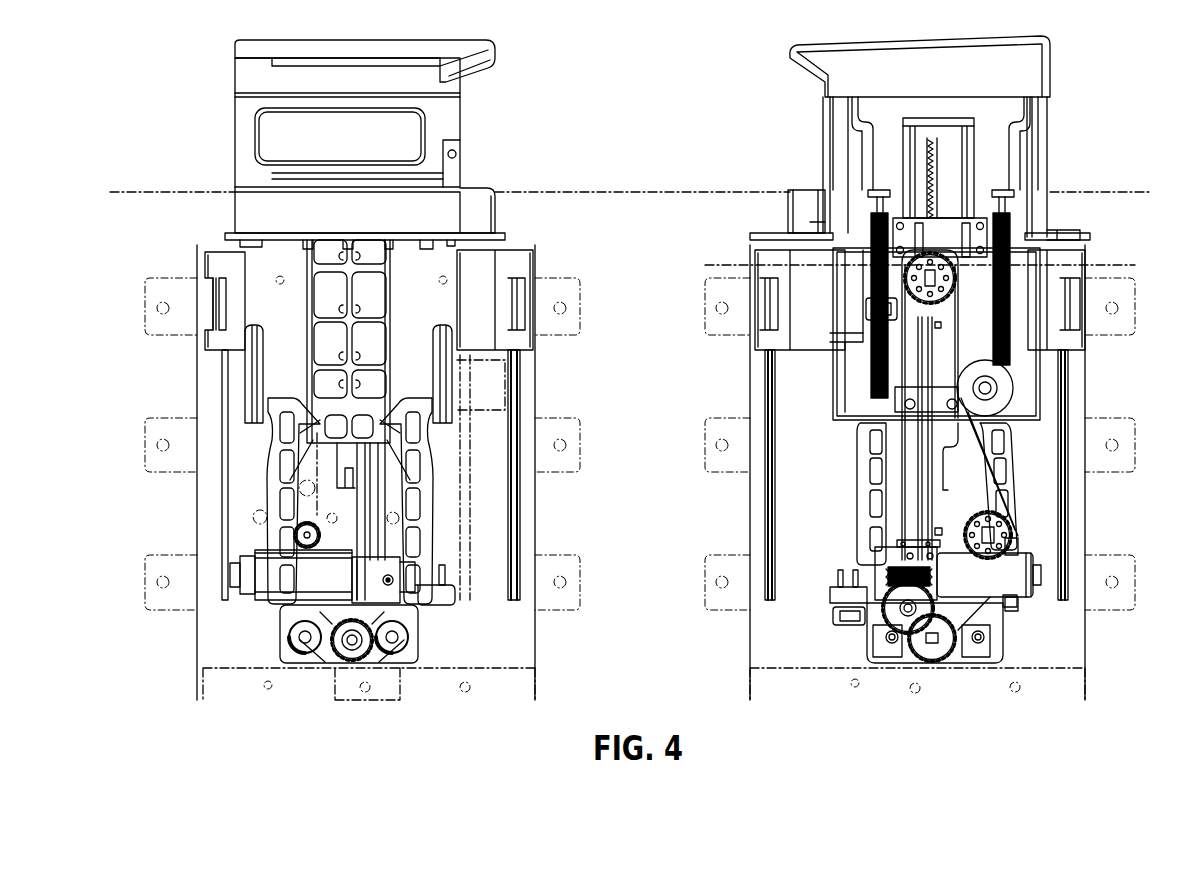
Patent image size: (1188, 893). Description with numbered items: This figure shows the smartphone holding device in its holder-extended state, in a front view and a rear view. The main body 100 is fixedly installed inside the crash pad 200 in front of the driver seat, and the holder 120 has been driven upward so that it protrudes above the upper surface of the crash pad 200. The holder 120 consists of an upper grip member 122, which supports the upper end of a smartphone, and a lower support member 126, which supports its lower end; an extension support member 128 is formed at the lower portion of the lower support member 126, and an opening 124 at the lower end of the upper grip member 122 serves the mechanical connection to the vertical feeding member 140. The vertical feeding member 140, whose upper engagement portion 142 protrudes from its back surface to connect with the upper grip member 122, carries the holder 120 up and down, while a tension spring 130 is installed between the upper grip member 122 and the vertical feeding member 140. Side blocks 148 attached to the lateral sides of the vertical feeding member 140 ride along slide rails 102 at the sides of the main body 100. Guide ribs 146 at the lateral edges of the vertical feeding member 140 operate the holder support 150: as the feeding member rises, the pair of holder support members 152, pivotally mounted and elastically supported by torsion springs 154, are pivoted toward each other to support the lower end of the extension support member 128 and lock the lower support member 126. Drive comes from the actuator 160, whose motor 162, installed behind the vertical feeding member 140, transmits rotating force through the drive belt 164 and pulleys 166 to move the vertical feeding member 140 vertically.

The main body 100 is at (532, 237).
The slide rails 102 is at (520, 404).
The holder 120 is at (657, 138).
The upper grip member 122 is at (463, 58).
The opening 124 is at (972, 150).
The lower support member 126 is at (453, 165).
The extension support member 128 is at (325, 302).
The tension spring 130 is at (1007, 357).
The vertical feeding member 140 is at (440, 302).
The upper engagement portion 142 is at (968, 125).
The guide ribs 146 is at (253, 378).
The side blocks 148 is at (515, 340).
The holder support 150 is at (124, 653).
The holder support members 152 is at (266, 598).
The torsion springs 154 is at (335, 660).
The actuator 160 is at (1005, 584).
The motor 162 is at (1007, 580).
The drive belt 164 is at (1010, 508).
The pulleys 166 is at (1017, 533).
The crash pad 200 is at (537, 192).